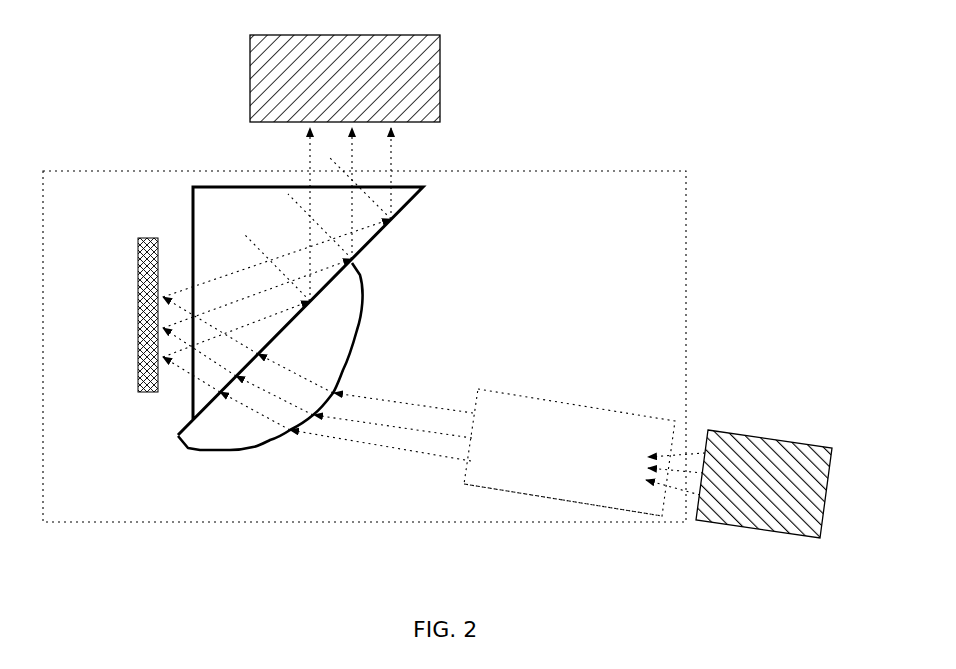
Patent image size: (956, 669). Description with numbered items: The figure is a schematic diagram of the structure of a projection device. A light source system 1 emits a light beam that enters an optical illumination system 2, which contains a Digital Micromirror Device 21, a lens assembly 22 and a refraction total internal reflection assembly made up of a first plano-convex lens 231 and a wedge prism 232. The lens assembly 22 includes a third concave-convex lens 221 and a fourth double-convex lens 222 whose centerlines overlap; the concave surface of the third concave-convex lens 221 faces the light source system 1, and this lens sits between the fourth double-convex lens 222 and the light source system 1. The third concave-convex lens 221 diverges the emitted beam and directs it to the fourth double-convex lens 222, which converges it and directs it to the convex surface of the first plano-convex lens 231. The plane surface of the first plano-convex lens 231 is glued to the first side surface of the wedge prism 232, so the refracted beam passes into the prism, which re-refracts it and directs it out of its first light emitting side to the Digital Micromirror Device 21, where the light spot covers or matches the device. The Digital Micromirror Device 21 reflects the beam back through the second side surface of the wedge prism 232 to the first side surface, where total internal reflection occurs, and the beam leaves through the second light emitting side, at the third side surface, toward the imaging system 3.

The light source system 1 is at (750, 437).
The optical illumination system 2 is at (635, 287).
The imaging system 3 is at (250, 82).
The Digital Micromirror Device 21 is at (138, 357).
The lens assembly 22 is at (564, 403).
The third concave-convex lens 221 is at (612, 483).
The fourth double-convex lens 222 is at (523, 482).
The first plano-convex lens 231 is at (175, 437).
The wedge prism 232 is at (192, 397).